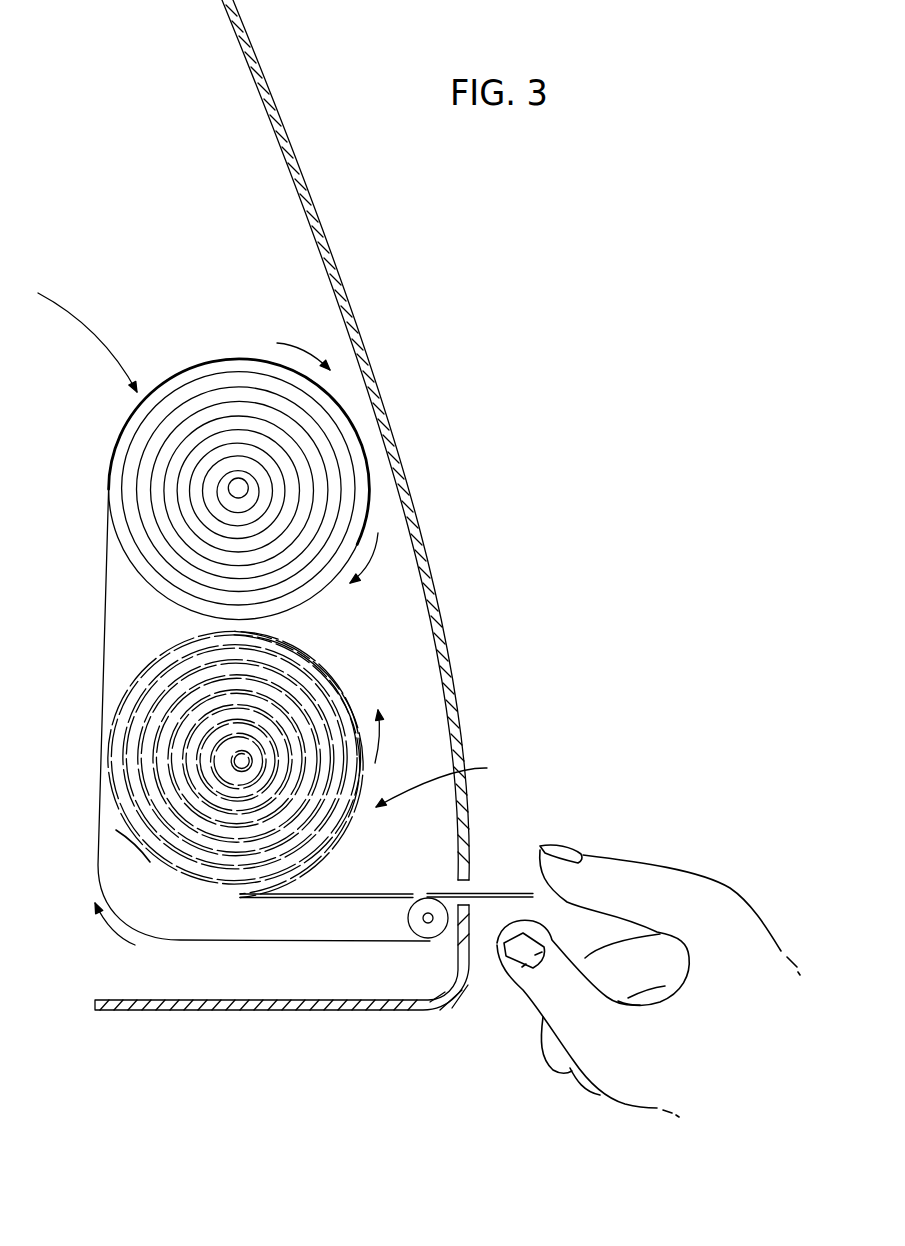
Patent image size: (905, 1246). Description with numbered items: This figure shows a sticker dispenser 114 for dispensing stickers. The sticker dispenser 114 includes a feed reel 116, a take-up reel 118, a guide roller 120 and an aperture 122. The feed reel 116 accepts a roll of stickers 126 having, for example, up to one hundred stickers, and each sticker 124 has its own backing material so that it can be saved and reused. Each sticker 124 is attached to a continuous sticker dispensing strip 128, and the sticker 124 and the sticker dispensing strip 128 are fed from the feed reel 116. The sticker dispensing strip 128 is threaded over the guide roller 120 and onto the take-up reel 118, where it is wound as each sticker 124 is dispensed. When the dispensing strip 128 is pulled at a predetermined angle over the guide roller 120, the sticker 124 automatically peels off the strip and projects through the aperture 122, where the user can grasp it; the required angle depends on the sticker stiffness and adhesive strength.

The sticker dispenser 114 is at (408, 567).
The feed reel 116 is at (248, 755).
The take-up reel 118 is at (237, 498).
The guide roller 120 is at (427, 932).
The aperture 122 is at (467, 888).
The sticker 124 is at (370, 893).
The roll of stickers 126 is at (123, 822).
The sticker dispensing strip 128 is at (243, 942).